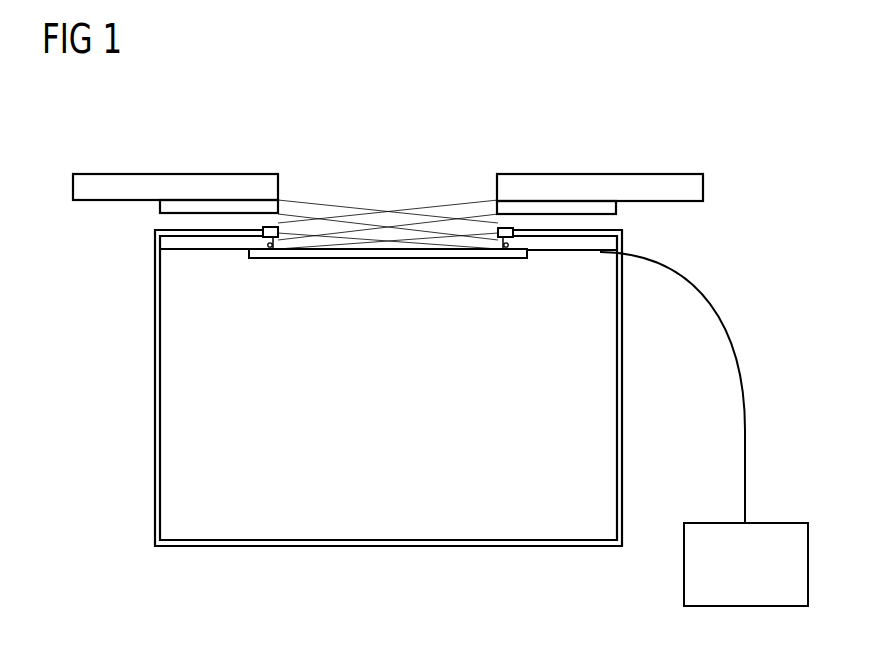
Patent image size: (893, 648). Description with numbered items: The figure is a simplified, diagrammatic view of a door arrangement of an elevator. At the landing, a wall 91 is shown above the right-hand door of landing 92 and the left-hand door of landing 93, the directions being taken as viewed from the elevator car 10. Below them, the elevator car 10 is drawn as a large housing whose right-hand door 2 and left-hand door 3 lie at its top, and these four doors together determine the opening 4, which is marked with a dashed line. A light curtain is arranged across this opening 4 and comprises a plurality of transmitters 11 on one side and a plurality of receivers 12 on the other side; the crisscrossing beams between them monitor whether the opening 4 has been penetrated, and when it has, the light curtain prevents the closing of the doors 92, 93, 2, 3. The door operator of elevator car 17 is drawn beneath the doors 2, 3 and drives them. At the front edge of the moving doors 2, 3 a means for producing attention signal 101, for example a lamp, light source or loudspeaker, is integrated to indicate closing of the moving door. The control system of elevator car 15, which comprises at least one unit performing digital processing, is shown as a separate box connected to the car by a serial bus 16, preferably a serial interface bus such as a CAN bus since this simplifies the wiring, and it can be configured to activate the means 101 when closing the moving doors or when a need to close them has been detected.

The elevator car 10 is at (405, 503).
The wall 91 is at (123, 180).
The left-hand door of landing 93 is at (200, 208).
The right-hand door of landing 92 is at (579, 212).
The receivers 12 is at (271, 227).
The transmitters 11 is at (505, 228).
The opening 4 is at (388, 200).
The left-hand door 3 is at (197, 250).
The right-hand door 2 is at (577, 250).
The door operator of elevator car 17 is at (383, 259).
The means for producing attention signal 101 is at (268, 259).
The serial bus 16 is at (730, 330).
The control system of elevator car 15 is at (785, 523).